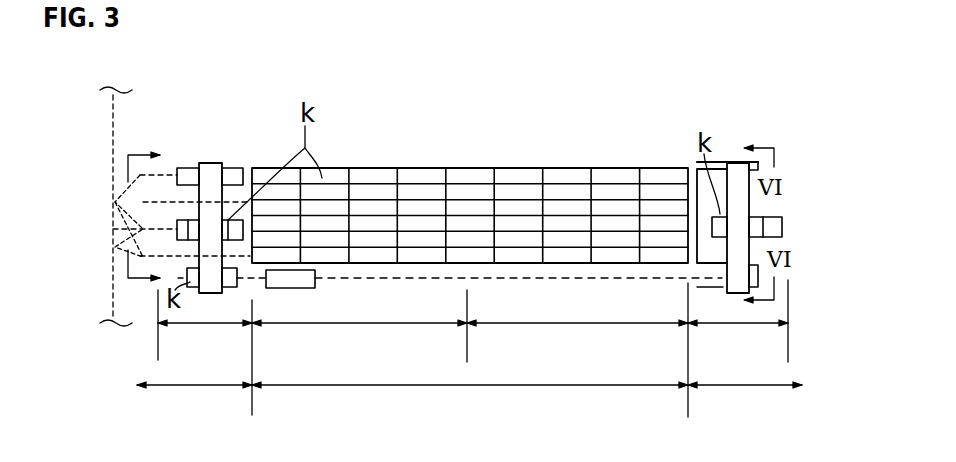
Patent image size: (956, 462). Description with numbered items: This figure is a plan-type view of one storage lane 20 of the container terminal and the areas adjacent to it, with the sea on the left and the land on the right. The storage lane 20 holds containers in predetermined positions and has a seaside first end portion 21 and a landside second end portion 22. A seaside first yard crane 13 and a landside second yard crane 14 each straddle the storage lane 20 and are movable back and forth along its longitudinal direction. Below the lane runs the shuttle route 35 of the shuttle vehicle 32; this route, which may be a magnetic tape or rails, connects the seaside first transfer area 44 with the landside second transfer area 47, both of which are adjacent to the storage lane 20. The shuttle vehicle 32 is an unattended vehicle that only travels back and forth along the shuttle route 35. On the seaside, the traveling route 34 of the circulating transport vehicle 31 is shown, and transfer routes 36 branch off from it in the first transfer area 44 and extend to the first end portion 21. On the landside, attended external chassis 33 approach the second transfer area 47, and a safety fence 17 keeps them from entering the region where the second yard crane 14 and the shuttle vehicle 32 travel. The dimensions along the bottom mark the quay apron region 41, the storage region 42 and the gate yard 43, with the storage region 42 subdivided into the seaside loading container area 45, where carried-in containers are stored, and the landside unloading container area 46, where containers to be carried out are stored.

The first yard crane 13 is at (211, 172).
The second yard crane 14 is at (738, 180).
The safety fence 17 is at (752, 147).
The storage lane 20 is at (457, 158).
The first end portion 21 is at (253, 168).
The second end portion 22 is at (688, 193).
The circulating transport vehicle 31 is at (190, 172).
The shuttle vehicle 32 is at (298, 282).
The external chassis 33 is at (772, 217).
The traveling route 34 is at (113, 112).
The shuttle route 35 is at (515, 281).
The transfer route 36 is at (155, 212).
The quay apron region 41 is at (165, 387).
The storage region 42 is at (452, 387).
The gate yard 43 is at (733, 387).
The first transfer area 44 is at (185, 325).
The seaside loading container area 45 is at (365, 325).
The landside unloading container area 46 is at (560, 325).
The second transfer area 47 is at (723, 325).